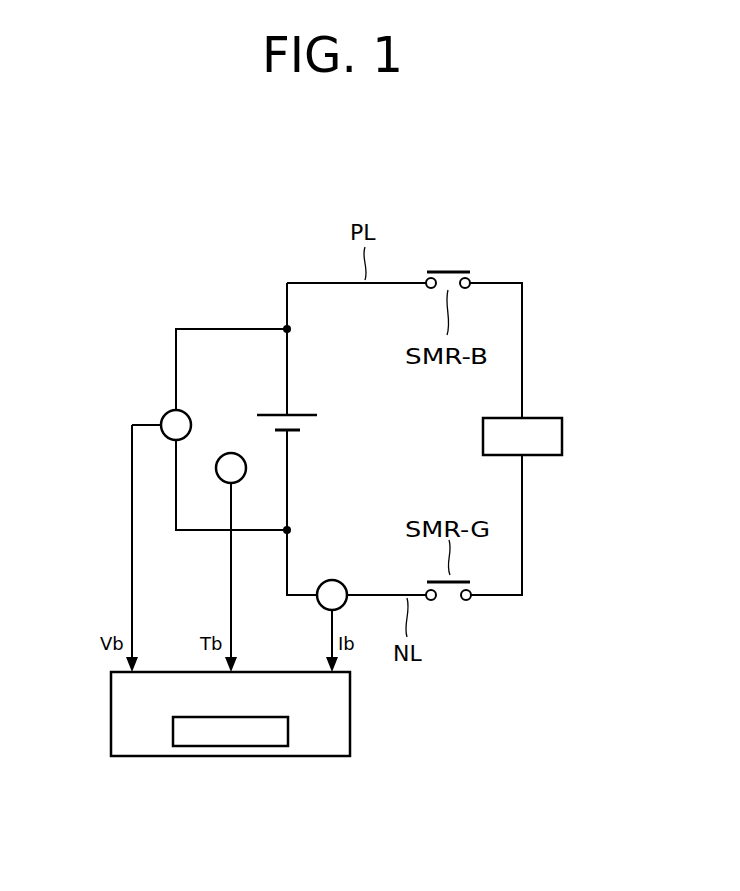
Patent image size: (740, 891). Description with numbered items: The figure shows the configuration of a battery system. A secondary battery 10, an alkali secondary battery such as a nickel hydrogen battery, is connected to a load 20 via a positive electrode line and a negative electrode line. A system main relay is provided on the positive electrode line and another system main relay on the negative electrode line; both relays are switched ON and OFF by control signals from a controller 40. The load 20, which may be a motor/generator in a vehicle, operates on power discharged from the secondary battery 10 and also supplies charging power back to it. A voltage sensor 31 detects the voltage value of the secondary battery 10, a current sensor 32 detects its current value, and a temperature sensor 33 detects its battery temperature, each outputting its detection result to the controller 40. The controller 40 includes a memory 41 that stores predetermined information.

The secondary battery 10 is at (308, 423).
The load 20 is at (565, 434).
The voltage sensor 31 is at (162, 416).
The current sensor 32 is at (317, 606).
The temperature sensor 33 is at (225, 453).
The controller 40 is at (111, 713).
The memory 41 is at (290, 729).